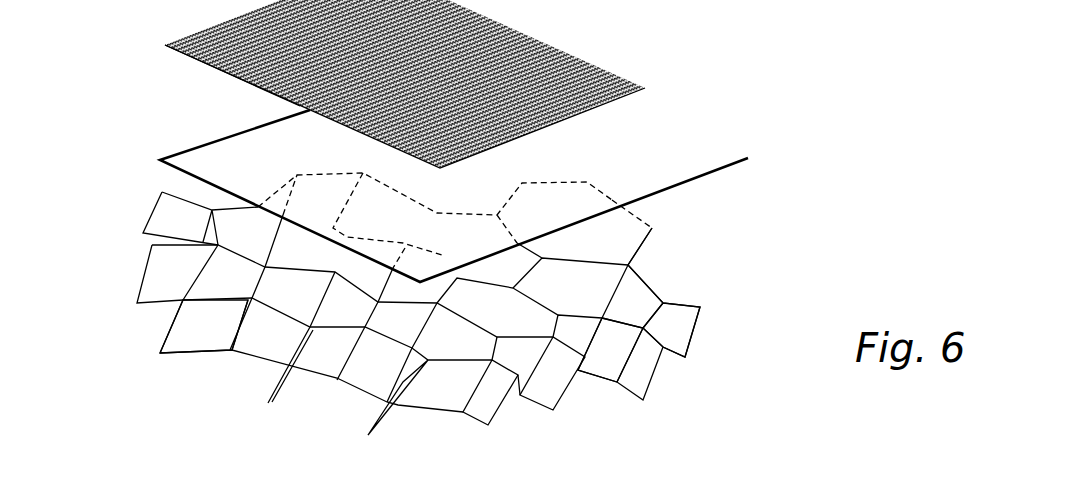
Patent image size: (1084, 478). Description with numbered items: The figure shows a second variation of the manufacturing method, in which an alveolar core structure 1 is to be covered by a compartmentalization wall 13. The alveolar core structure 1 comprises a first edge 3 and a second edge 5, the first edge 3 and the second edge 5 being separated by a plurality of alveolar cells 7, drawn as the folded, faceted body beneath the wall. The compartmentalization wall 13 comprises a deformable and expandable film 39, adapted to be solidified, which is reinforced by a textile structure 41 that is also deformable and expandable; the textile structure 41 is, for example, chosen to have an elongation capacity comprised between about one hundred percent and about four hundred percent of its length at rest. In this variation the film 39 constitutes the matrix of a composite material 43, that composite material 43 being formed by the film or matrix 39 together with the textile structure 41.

The folded core structure 1 is at (112, 270).
The first edge 3 is at (648, 286).
The second edge 5 is at (578, 374).
The alveolar cells 7 is at (197, 328).
The compartmentalization wall 13 is at (652, 132).
The deformable and expandable film 39 is at (688, 155).
The textile structure 41 is at (508, 30).
The composite material 43 is at (192, 86).